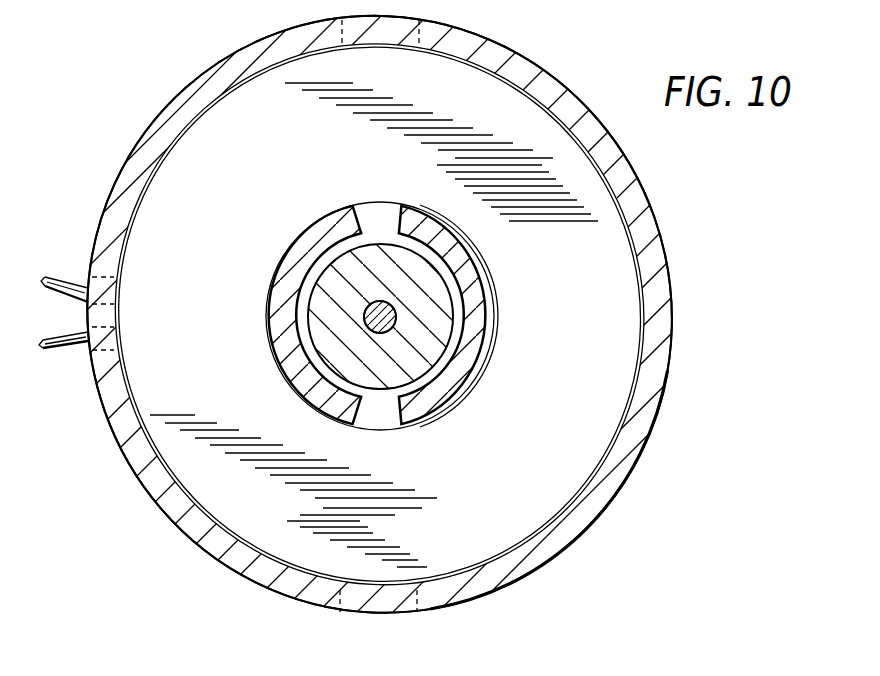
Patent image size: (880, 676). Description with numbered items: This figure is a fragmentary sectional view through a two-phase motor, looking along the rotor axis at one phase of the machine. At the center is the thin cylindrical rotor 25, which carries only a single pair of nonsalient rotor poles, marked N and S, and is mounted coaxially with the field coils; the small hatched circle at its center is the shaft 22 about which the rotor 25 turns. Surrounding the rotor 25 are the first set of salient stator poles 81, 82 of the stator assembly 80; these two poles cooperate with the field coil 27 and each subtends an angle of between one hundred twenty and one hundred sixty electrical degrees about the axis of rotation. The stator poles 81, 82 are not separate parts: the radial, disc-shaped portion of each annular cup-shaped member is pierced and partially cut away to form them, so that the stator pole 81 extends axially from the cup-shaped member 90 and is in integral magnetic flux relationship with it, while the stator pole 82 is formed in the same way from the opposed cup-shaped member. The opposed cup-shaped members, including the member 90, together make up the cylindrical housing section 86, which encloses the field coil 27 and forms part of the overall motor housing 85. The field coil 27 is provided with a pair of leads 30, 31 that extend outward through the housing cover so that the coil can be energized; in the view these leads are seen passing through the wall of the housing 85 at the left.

The shaft 22 is at (381, 333).
The rotor 25 is at (420, 345).
The field coil 27 is at (618, 209).
The lead 30 is at (67, 286).
The lead 31 is at (67, 350).
The stator assembly 80 is at (150, 128).
The salient stator pole 81 is at (484, 313).
The salient stator pole 82 is at (269, 318).
The housing 85 is at (597, 517).
The cylindrical housing section 86 is at (225, 60).
The annular cup-shaped member 90 is at (582, 110).